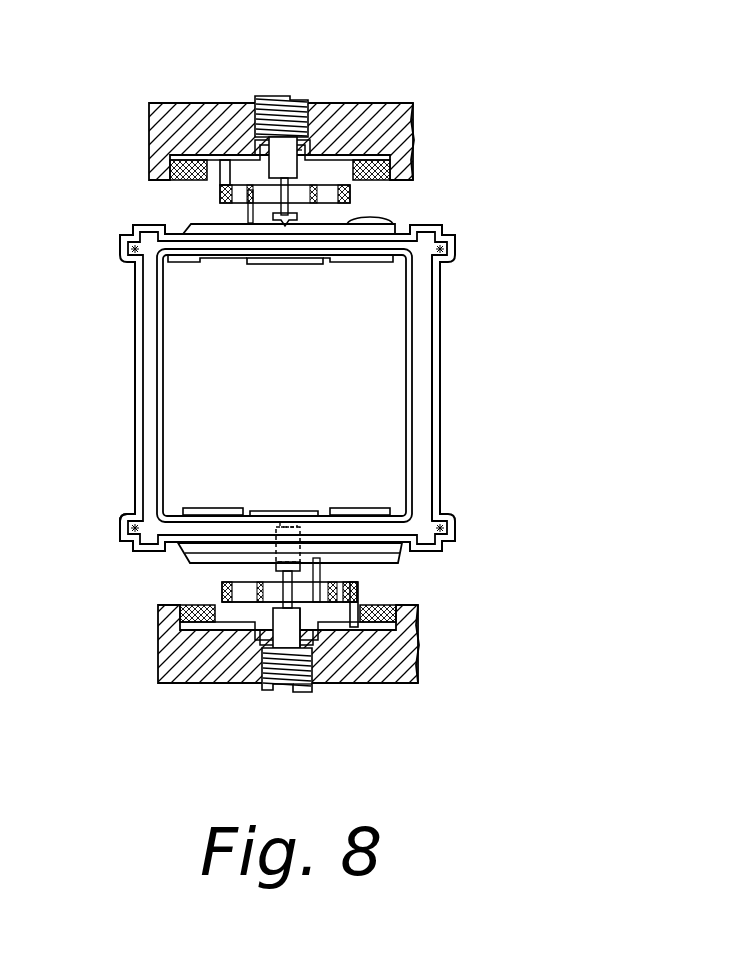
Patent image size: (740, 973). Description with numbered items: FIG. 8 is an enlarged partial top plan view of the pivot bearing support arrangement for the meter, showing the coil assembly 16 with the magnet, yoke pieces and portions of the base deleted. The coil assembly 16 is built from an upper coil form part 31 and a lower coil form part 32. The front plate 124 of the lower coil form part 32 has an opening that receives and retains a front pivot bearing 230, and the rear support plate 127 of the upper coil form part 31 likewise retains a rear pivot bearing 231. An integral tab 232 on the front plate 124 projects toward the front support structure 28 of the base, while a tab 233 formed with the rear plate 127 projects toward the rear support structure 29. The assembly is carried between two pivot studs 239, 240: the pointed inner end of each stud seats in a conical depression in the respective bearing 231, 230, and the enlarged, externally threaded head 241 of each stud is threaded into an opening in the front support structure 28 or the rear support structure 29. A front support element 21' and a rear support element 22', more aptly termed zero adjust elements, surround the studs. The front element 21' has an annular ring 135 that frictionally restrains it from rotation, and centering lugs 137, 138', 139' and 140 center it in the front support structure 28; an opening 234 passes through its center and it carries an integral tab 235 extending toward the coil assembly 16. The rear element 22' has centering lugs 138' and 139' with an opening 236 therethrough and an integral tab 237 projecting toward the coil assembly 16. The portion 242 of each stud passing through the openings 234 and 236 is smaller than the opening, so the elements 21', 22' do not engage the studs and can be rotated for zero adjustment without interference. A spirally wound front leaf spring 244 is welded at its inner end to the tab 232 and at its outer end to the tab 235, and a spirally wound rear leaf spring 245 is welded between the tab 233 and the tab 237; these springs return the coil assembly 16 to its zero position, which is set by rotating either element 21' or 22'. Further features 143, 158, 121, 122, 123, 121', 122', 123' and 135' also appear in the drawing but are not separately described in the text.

The coil assembly 16 is at (455, 334).
The frame side wall 143 is at (448, 410).
The frame corner 158 is at (122, 532).
The upper left retaining bracket 122 is at (207, 301).
The upper center retaining plate 123 is at (285, 295).
The upper right retaining bracket 121 is at (364, 291).
The rear support plate 127 is at (360, 226).
The lower left retaining bracket 122' is at (213, 493).
The lower center retaining plate 123' is at (285, 483).
The lower right retaining bracket 121' is at (360, 488).
The upper coil form part 31 is at (400, 221).
The front plate 124 is at (196, 560).
The lower coil form part 32 is at (402, 563).
The rear support structure 29 is at (383, 96).
The rear support element 22' is at (443, 141).
The centering lug 138' is at (212, 123).
The right clip hook 135' is at (419, 176).
The centering lug 139' is at (286, 104).
The stud portion 242 is at (262, 96).
The pivot stud 240 is at (262, 93).
The enlarged head 241 is at (291, 98).
The opening 236 is at (310, 173).
The rear pivot bearing 231 is at (298, 218).
The integral tab 237 is at (218, 192).
The rear leaf spring 245 is at (221, 200).
The tab 233 is at (250, 215).
The front support structure 28 is at (398, 686).
The front support element 21' is at (261, 644).
The centering lug 137 is at (232, 676).
The annular ring 135 is at (251, 618).
The opening 234 is at (268, 616).
The pivot stud 239 is at (307, 692).
The centering lug 140 is at (312, 643).
The pivot bearing 230 is at (278, 563).
The integral tab 232 is at (328, 566).
The front leaf spring 244 is at (333, 582).
The integral tab 235 is at (358, 592).